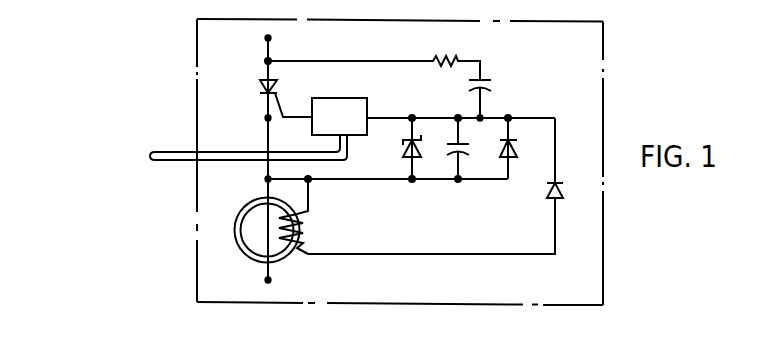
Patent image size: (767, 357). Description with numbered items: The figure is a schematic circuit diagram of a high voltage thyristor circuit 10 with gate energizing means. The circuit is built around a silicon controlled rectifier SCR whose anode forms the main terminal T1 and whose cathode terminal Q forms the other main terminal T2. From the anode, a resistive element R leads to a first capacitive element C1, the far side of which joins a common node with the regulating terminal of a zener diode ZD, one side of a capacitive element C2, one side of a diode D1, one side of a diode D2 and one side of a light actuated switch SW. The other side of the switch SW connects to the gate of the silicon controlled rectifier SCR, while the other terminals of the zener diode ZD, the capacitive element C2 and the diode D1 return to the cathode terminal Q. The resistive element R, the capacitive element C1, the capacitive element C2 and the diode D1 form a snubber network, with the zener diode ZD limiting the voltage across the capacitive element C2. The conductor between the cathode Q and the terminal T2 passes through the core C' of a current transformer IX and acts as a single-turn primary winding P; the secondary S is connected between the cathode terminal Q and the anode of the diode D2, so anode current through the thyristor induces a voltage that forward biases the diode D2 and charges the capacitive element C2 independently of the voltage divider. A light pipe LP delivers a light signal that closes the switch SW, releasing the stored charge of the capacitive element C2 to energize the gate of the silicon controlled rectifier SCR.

The high voltage thyristor circuit 10 is at (197, 36).
The terminal T1 is at (265, 38).
The main terminal T2 is at (266, 280).
The silicon controlled rectifier SCR is at (257, 88).
The cathode terminal Q is at (265, 118).
The light actuated switch SW is at (339, 116).
The light pipe LP is at (183, 151).
The resistive element R is at (446, 53).
The first capacitive element C1 is at (493, 86).
The capacitive element C2 is at (484, 147).
The zener diode ZD is at (400, 152).
The diode D1 is at (518, 148).
The diode D2 is at (543, 185).
The current transformer IX is at (234, 229).
The single-turn primary winding P is at (266, 233).
The secondary winding S is at (307, 228).
The core C' is at (247, 190).